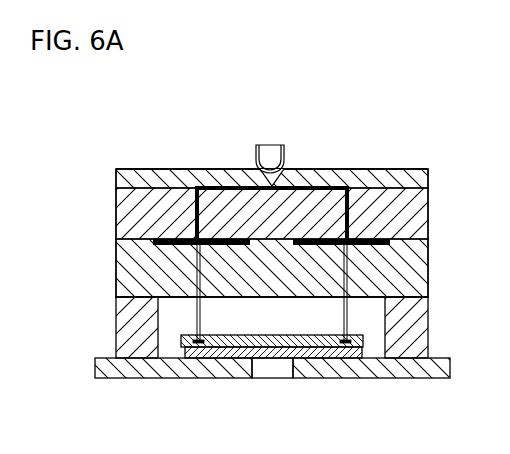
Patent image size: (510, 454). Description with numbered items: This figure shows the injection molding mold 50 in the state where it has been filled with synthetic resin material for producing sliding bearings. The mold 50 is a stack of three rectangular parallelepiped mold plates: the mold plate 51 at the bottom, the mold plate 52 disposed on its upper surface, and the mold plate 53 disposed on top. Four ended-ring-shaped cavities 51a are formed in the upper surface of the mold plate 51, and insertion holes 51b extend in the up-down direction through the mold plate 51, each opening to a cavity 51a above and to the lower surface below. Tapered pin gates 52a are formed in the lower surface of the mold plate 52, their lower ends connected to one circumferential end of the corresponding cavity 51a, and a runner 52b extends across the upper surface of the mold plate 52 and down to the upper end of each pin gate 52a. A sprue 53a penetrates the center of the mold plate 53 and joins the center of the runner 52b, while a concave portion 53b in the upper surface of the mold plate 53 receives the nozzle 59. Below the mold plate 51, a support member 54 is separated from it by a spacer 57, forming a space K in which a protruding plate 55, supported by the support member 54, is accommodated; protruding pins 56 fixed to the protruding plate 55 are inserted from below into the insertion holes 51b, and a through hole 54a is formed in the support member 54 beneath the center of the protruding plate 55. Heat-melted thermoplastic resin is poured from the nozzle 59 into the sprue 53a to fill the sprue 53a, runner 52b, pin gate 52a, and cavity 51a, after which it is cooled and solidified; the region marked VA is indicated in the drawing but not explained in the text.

The mold 50 is at (428, 166).
The mold plate 51 is at (115, 270).
The cavity 51a is at (388, 228).
The insertion hole 51b is at (197, 299).
The mold plate 52 is at (116, 203).
The pin gate 52a is at (405, 192).
The runner 52b is at (345, 181).
The mold plate 53 is at (116, 178).
The sprue 53a is at (283, 183).
The concave portion 53b is at (257, 166).
The support member 54 is at (97, 370).
The through hole 54a is at (278, 369).
The protruding plate 55 is at (203, 360).
The protruding pin 56 is at (202, 328).
The spacer 57 is at (118, 325).
The nozzle 59 is at (268, 146).
The space K is at (378, 326).
The vibration region VA is at (100, 242).